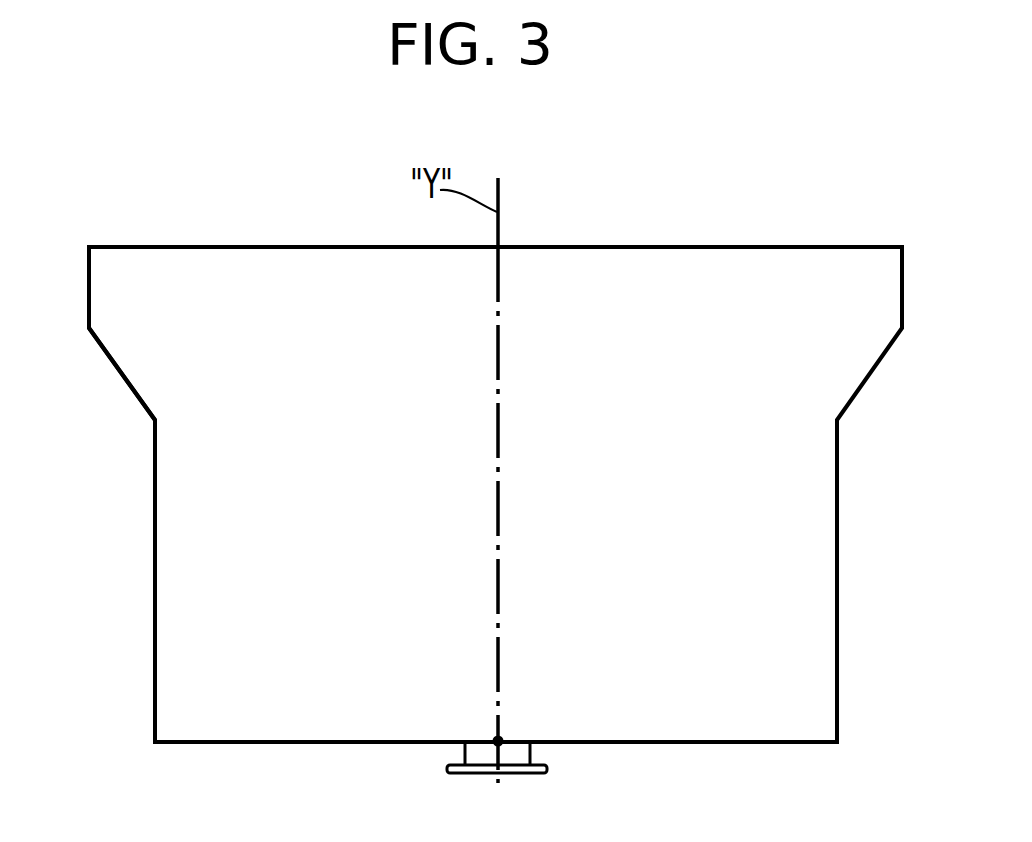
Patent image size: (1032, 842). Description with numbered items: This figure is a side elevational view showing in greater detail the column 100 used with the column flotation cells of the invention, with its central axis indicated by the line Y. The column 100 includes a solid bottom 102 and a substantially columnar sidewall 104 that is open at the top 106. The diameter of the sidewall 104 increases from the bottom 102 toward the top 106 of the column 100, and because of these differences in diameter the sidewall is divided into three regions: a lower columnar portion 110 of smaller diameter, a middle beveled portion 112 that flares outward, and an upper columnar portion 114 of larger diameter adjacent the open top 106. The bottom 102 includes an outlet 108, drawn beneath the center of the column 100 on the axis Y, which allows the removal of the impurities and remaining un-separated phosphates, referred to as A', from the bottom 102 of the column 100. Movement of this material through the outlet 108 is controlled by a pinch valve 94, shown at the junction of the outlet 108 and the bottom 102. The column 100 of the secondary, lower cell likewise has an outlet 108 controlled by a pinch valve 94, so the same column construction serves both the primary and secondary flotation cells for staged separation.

The column 100 is at (733, 145).
The bottom 102 is at (732, 744).
The sidewall 104 is at (837, 486).
The top 106 is at (636, 245).
The outlet 108 is at (455, 755).
The lower columnar portion 110 is at (165, 663).
The middle beveled portion 112 is at (138, 375).
The upper columnar portion 114 is at (98, 278).
The pinch valve 94 is at (498, 741).